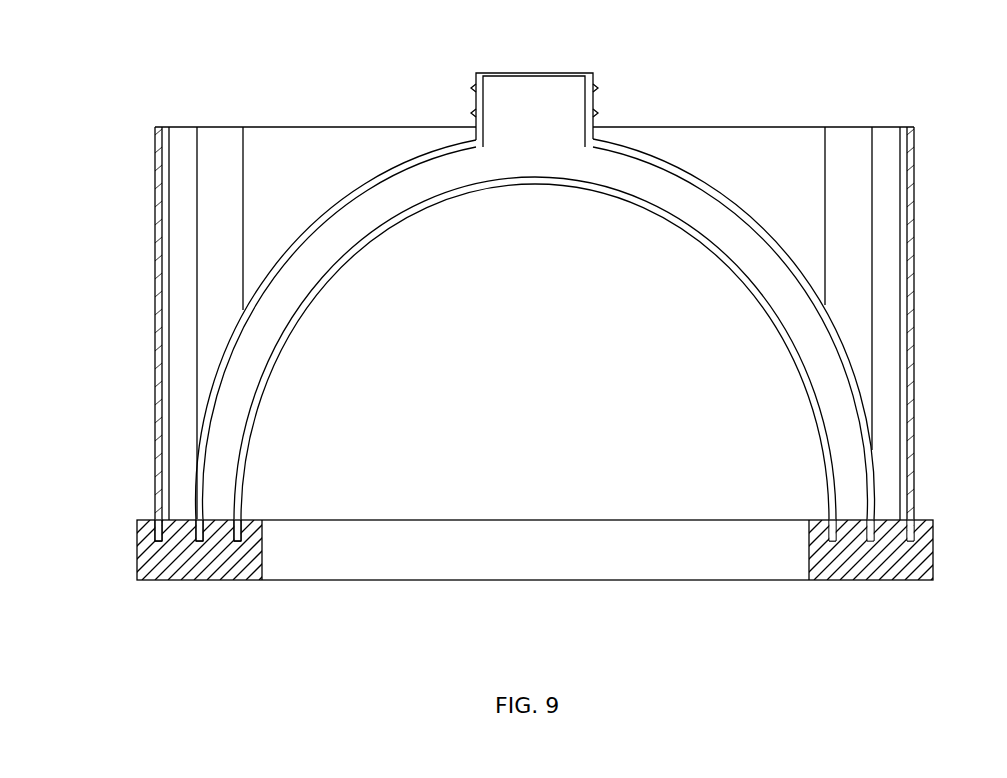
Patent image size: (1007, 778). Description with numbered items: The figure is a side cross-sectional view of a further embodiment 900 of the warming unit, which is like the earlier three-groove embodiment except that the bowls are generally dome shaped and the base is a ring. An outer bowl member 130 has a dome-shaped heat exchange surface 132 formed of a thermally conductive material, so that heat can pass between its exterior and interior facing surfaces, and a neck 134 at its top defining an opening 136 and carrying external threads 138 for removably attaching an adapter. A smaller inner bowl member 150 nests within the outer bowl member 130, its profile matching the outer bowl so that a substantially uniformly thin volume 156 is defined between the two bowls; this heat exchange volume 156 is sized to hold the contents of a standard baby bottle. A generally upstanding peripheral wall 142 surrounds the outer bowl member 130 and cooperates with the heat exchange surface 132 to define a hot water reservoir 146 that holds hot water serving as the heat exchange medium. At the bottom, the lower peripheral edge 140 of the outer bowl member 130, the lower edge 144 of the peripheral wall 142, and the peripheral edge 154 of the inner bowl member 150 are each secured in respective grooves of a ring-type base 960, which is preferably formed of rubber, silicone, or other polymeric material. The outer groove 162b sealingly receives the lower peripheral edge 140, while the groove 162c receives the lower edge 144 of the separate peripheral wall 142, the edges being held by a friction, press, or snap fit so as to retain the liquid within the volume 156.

The embodiment 900 is at (845, 37).
The outer bowl member 130 is at (432, 143).
The heat exchange surface 132 is at (387, 166).
The neck 134 is at (590, 70).
The opening 136 is at (507, 86).
The external threads 138 is at (596, 119).
The lower peripheral edge 140 is at (172, 521).
The peripheral wall 142 is at (915, 207).
The lower edge 144 is at (151, 528).
The hot water reservoir 146 is at (868, 162).
The inner bowl member 150 is at (415, 208).
The peripheral edge 154 is at (237, 518).
The volume 156 is at (365, 216).
The outer groove 162b is at (218, 548).
The groove 162c is at (148, 545).
The ring-type base 960 is at (833, 582).